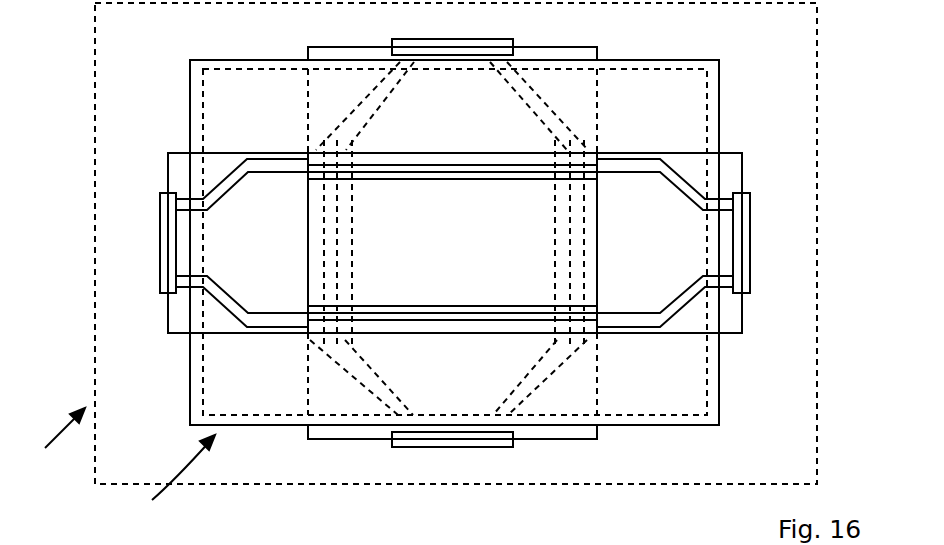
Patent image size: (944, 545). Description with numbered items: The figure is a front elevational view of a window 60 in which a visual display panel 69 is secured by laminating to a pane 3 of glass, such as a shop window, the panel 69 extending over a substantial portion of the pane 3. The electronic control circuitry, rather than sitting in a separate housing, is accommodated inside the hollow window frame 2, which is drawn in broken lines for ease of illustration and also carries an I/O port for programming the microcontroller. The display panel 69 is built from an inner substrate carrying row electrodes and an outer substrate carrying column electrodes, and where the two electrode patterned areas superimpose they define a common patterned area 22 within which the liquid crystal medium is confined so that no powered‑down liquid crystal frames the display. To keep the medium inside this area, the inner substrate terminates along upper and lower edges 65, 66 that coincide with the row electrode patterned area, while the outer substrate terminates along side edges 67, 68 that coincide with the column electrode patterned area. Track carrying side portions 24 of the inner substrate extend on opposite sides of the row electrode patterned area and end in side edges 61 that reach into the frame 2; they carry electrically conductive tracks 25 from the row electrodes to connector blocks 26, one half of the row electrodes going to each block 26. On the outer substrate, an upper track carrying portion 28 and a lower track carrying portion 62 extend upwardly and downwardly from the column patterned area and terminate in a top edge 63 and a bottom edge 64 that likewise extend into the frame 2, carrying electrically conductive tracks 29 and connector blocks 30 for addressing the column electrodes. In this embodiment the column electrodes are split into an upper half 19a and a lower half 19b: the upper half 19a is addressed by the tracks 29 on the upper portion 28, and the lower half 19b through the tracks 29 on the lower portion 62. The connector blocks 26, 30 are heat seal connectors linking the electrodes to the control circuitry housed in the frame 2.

The window frame 2 is at (218, 485).
The pane 3 is at (692, 390).
The upper half of the column electrodes 19a is at (352, 203).
The lower half of the column electrodes 19b is at (352, 272).
The common patterned area 22 is at (370, 148).
The track carrying side portions 24 is at (221, 330).
The electrically conductive tracks 25 is at (225, 180).
The connector blocks 26 is at (162, 243).
The upper track carrying portion 28 is at (590, 53).
The electrically conductive tracks 29 is at (367, 95).
The connector block 30 is at (483, 43).
The window 60 is at (56, 448).
The side edges 61 is at (168, 187).
The lower track carrying portion 62 is at (582, 388).
The top edge 63 is at (560, 45).
The bottom edge 64 is at (583, 438).
The upper edge 65 is at (447, 148).
The lower edge 66 is at (445, 333).
The side edge 67 is at (307, 258).
The side edge 68 is at (598, 253).
The visual display panel 69 is at (166, 484).